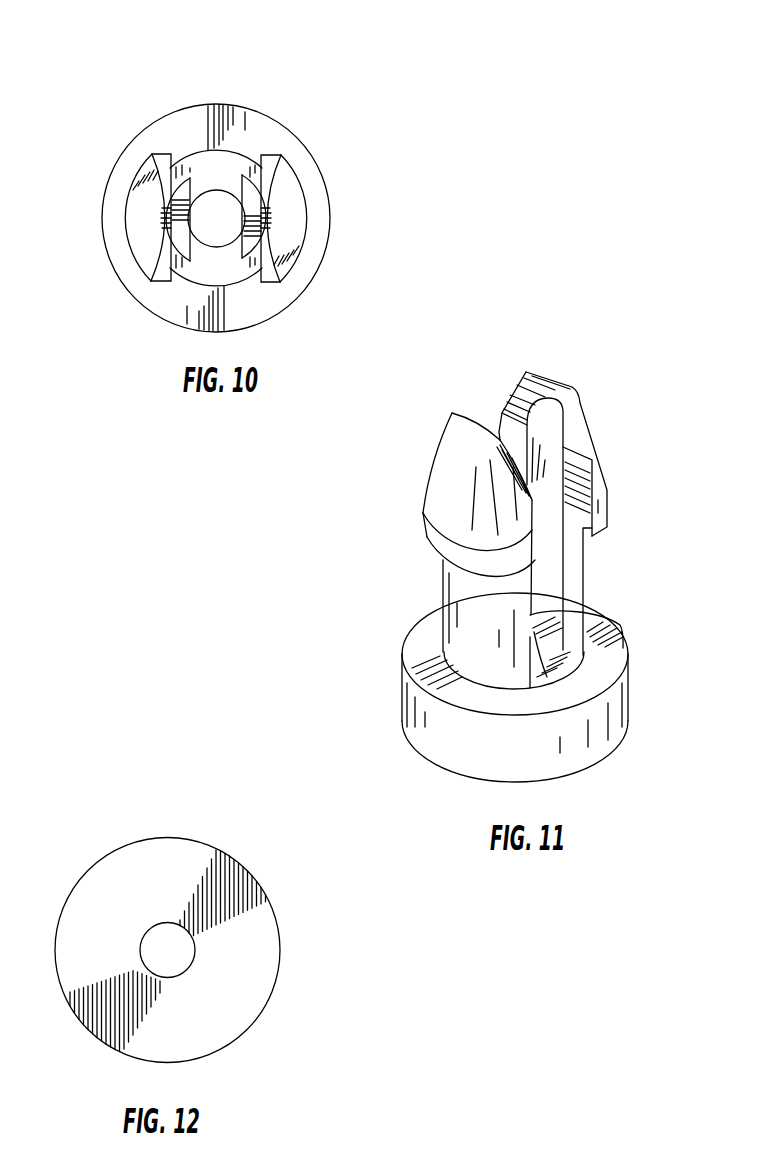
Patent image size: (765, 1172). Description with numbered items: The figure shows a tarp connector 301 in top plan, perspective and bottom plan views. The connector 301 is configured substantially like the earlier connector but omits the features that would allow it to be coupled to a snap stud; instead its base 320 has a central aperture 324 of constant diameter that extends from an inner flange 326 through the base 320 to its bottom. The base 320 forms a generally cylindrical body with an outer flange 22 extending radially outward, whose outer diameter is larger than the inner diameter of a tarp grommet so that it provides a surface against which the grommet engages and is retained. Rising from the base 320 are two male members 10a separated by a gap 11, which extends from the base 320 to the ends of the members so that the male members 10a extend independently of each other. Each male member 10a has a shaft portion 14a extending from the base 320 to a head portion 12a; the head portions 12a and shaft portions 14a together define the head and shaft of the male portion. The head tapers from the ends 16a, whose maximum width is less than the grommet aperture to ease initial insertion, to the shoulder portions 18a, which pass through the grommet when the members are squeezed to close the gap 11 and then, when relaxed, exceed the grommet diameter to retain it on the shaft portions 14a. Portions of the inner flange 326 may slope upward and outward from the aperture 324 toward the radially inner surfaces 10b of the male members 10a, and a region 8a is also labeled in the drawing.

In FIG. 10, the connector 301 is at (128, 55).
In FIG. 11, the connector 301 is at (662, 380).
In FIG. 10, the base 320 is at (182, 108).
In FIG. 11, the base 320 is at (413, 708).
In FIG. 12, the base 320 is at (72, 888).
In FIG. 10, the central aperture 324 is at (215, 207).
In FIG. 11, the central aperture 324 is at (540, 670).
In FIG. 12, the central aperture 324 is at (162, 942).
In FIG. 10, the inner flange 326 is at (215, 253).
In FIG. 11, the inner flange 326 is at (570, 660).
In FIG. 10, the outer flange 22 is at (143, 293).
In FIG. 11, the outer flange 22 is at (418, 635).
In FIG. 10, the head portion 12a is at (297, 195).
In FIG. 11, the head portion 12a is at (447, 490).
In FIG. 10, the end 16a is at (277, 197).
In FIG. 11, the end 16a is at (563, 384).
In FIG. 10, the shoulder portion 18a is at (133, 190).
In FIG. 11, the male member 10a is at (459, 405).
In FIG. 10, the radially inner surface 10b is at (150, 213).
In FIG. 11, the radially inner surface 10b is at (547, 487).
In FIG. 11, the shoulder 8a is at (433, 539).
In FIG. 11, the shaft portion 14a is at (458, 595).
In FIG. 11, the gap 11 is at (488, 377).